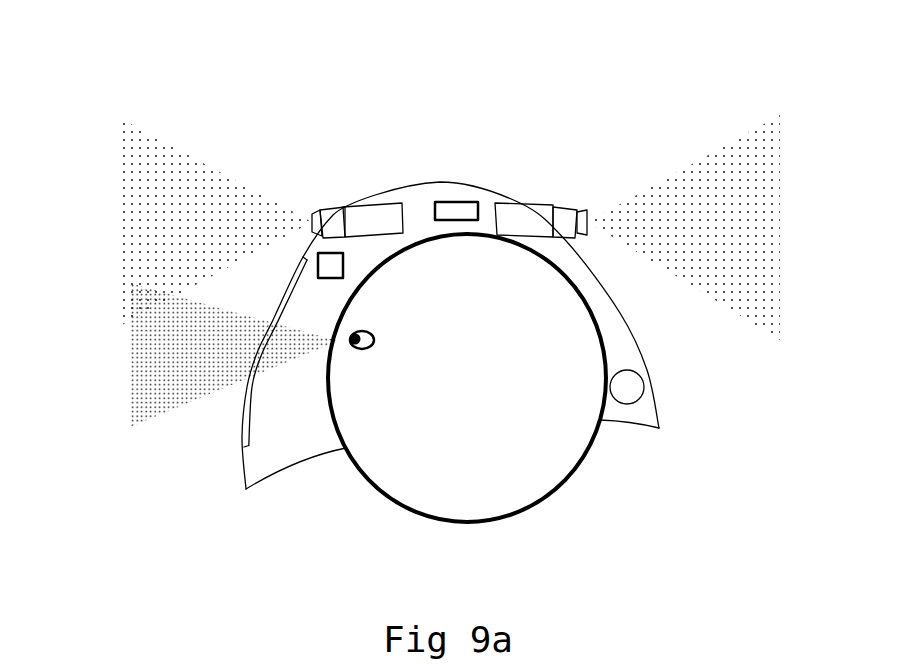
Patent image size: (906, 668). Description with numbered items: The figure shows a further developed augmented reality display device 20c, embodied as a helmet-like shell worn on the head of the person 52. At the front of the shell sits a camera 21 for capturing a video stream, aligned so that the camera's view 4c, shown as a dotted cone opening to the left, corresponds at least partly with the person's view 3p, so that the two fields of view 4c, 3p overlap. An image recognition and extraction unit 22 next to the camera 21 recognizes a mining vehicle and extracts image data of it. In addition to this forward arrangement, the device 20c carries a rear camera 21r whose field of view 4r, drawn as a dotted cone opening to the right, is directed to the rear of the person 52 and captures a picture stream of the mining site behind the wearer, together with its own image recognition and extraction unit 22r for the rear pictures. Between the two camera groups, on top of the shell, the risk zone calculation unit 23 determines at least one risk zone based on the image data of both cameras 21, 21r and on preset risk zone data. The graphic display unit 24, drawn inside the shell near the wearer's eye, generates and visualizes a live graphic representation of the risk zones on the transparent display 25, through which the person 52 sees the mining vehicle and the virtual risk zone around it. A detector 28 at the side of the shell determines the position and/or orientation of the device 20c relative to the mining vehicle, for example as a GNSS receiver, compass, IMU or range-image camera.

The camera's view 4c is at (163, 173).
The field of view of rear camera 4r is at (695, 217).
The augmented reality display device 20c is at (292, 148).
The camera 21 is at (333, 215).
The image recognition and extraction unit 22 is at (385, 212).
The risk zone calculation unit 23 is at (455, 212).
The image recognition and extraction unit for rear camera 22r is at (522, 215).
The rear camera 21r is at (563, 222).
The graphic display unit 24 is at (335, 267).
The display 25 is at (253, 353).
The person's view 3p is at (250, 337).
The detector 28 is at (622, 398).
The person 52 is at (598, 462).